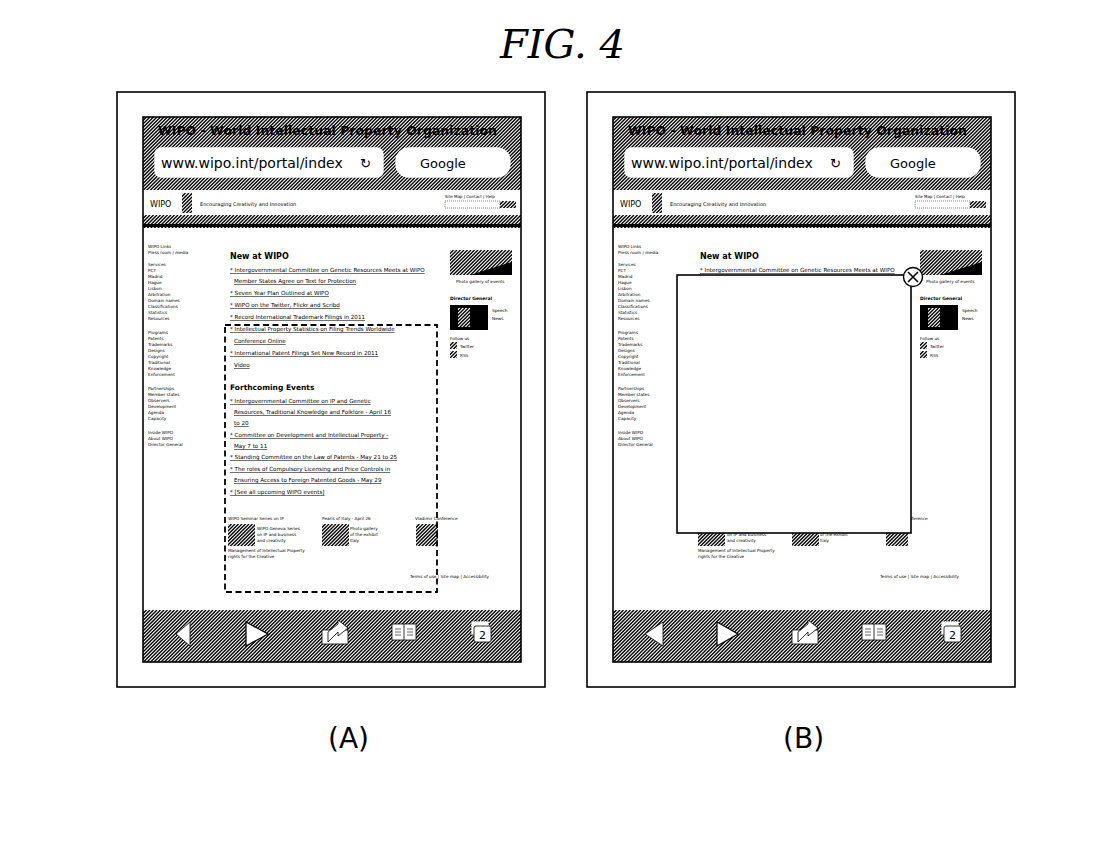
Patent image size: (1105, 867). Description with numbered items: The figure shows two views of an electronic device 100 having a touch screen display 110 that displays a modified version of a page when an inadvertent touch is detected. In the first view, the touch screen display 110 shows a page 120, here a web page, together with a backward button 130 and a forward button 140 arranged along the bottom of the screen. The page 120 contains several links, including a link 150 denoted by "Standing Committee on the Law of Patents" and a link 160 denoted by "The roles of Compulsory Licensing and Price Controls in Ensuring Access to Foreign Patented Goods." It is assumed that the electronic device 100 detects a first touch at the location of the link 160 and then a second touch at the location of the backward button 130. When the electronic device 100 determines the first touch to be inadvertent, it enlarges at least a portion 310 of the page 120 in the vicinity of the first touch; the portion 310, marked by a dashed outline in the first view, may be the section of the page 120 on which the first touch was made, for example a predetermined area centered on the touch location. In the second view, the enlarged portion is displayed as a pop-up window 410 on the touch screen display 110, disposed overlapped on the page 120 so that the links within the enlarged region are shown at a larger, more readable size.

The electronic device 100 is at (117, 120).
The touch screen display 110 is at (143, 638).
The page 120 is at (147, 520).
The backward button 130 is at (178, 638).
The forward button 140 is at (262, 640).
The link 150 is at (236, 448).
The link 160 is at (236, 478).
The portion 310 is at (224, 370).
The pop-up window 410 is at (912, 402).